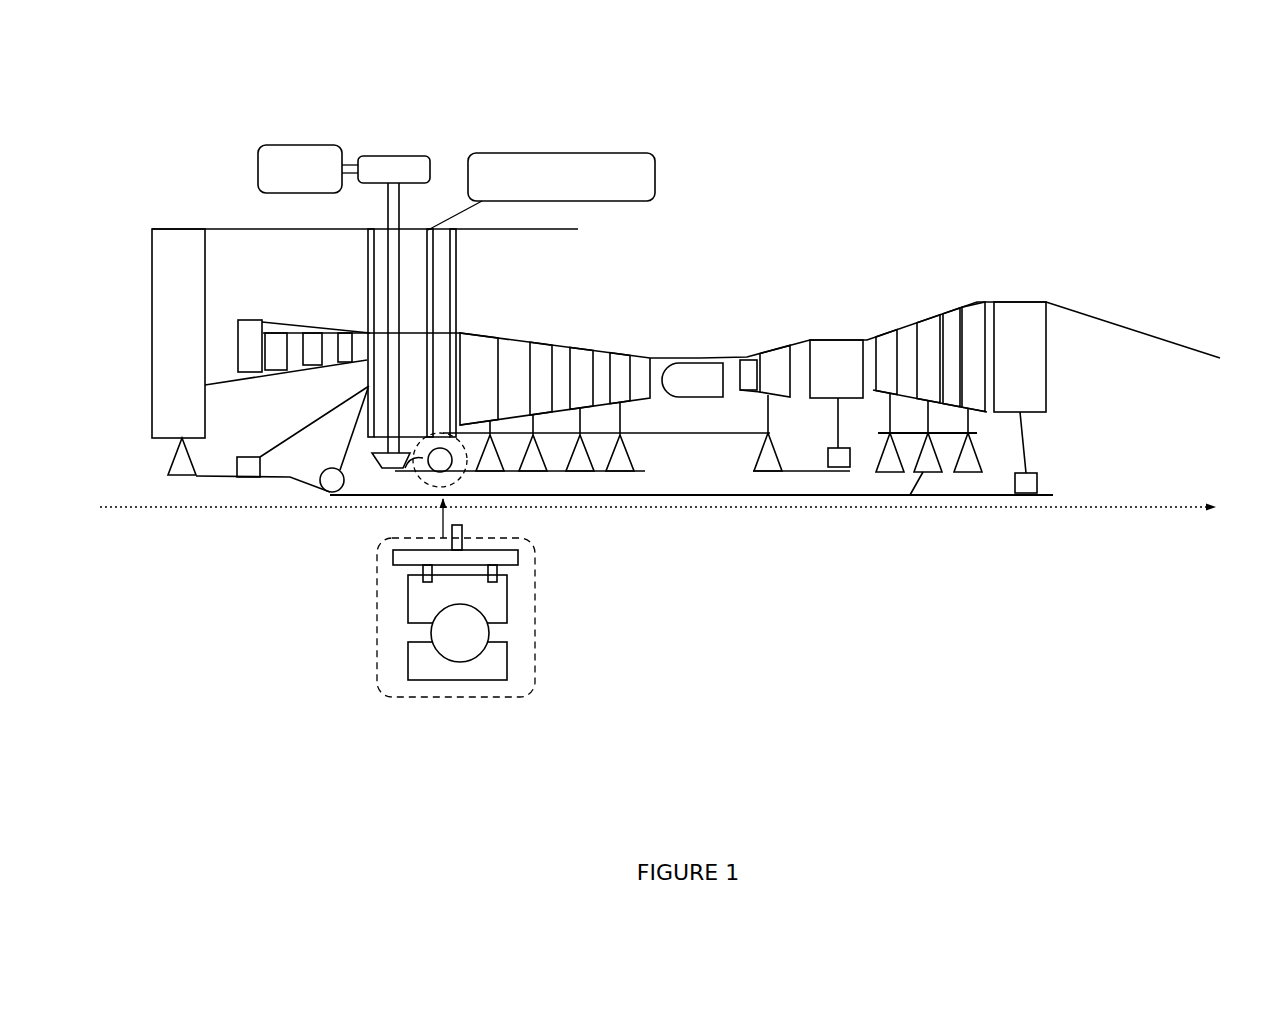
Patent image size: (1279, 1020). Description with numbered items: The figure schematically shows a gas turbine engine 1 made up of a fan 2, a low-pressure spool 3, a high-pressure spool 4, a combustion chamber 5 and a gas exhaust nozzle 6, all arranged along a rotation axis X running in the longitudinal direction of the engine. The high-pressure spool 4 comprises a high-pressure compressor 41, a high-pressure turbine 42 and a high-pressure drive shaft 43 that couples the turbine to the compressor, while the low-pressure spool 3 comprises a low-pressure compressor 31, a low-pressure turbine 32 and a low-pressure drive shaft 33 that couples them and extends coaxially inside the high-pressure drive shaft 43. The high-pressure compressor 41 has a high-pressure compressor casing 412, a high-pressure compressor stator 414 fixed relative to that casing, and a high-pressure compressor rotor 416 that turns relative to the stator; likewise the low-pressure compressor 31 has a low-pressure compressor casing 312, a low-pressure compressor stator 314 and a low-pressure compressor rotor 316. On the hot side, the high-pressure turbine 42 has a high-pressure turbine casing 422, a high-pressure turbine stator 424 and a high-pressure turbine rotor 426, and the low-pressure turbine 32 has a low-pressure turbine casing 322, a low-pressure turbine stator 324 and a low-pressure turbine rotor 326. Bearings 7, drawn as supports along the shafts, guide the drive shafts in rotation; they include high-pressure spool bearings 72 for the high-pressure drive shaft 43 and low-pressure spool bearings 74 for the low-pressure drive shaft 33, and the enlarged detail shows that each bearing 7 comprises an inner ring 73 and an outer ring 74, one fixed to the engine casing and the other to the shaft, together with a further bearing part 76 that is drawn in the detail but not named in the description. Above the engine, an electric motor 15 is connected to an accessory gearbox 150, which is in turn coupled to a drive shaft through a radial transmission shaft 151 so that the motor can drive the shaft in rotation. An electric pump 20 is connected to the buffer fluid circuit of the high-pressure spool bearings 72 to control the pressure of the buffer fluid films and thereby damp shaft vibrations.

The gas turbine engine 1 is at (1198, 157).
The fan 2 is at (152, 330).
The low-pressure spool 3 is at (780, 509).
The high-pressure spool 4 is at (658, 447).
The combustion chamber 5 is at (693, 357).
The gas exhaust nozzle 6 is at (1200, 374).
The bearings 7 is at (396, 636).
The electric motor 15 is at (299, 145).
The electric pump 20 is at (562, 153).
The low-pressure compressor 31 is at (278, 389).
The low-pressure turbine 32 is at (947, 454).
The low-pressure drive shaft 33 is at (730, 497).
The high-pressure compressor 41 is at (560, 421).
The high-pressure turbine 42 is at (790, 412).
The high-pressure drive shaft 43 is at (680, 434).
The high-pressure spool bearings 72 is at (408, 684).
The inner ring 73 is at (460, 575).
The outer ring 74 is at (524, 697).
The bearing outer race 76 is at (515, 575).
The accessory gearbox 150 is at (394, 156).
The radial transmission shaft 151 is at (405, 318).
The low-pressure compressor casing 312 is at (285, 335).
The low-pressure compressor stator 314 is at (312, 365).
The low-pressure compressor rotor 316 is at (322, 365).
The low-pressure turbine casing 322 is at (927, 315).
The low-pressure turbine stator 324 is at (905, 325).
The low-pressure turbine rotor 326 is at (972, 302).
The high-pressure compressor casing 412 is at (582, 343).
The high-pressure compressor stator 414 is at (620, 397).
The high-pressure compressor rotor 416 is at (597, 408).
The high-pressure turbine casing 422 is at (770, 345).
The high-pressure turbine stator 424 is at (748, 352).
The high-pressure turbine rotor 426 is at (808, 340).